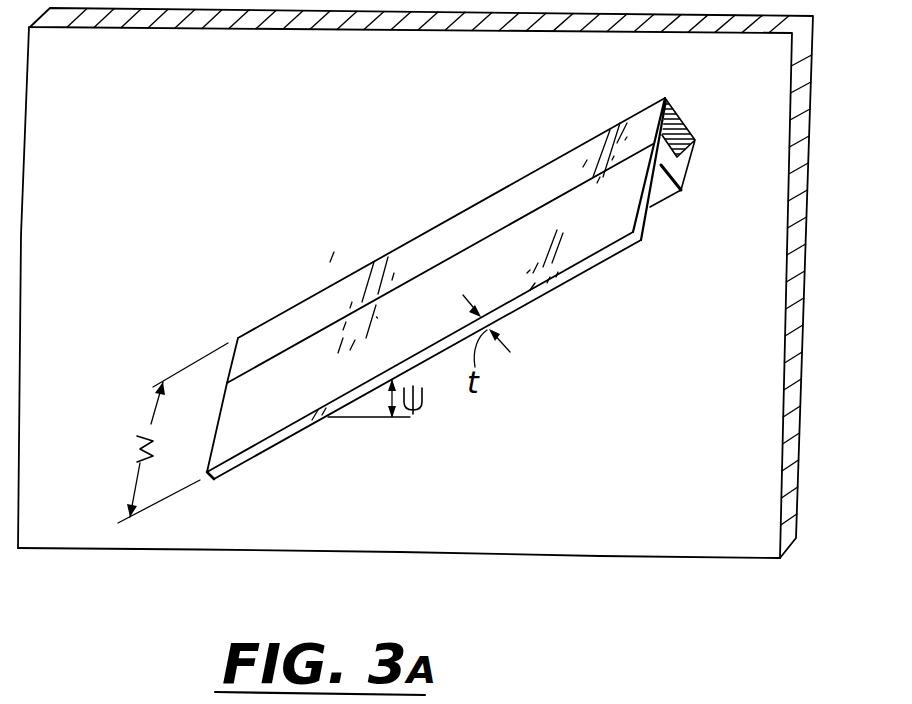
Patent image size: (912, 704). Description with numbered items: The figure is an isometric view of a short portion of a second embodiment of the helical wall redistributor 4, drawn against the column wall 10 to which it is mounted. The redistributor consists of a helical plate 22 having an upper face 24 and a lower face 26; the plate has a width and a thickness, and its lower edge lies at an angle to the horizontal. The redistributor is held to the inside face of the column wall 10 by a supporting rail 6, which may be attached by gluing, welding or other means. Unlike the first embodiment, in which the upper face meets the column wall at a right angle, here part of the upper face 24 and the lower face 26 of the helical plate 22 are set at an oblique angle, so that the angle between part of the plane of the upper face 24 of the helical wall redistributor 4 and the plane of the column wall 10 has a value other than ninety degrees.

The helical wall redistributor 4 is at (466, 276).
The supporting rail 6 is at (679, 160).
The column wall 10 is at (760, 162).
The helical plate 22 is at (327, 283).
The upper face 24 is at (435, 307).
The lower face 26 is at (576, 278).